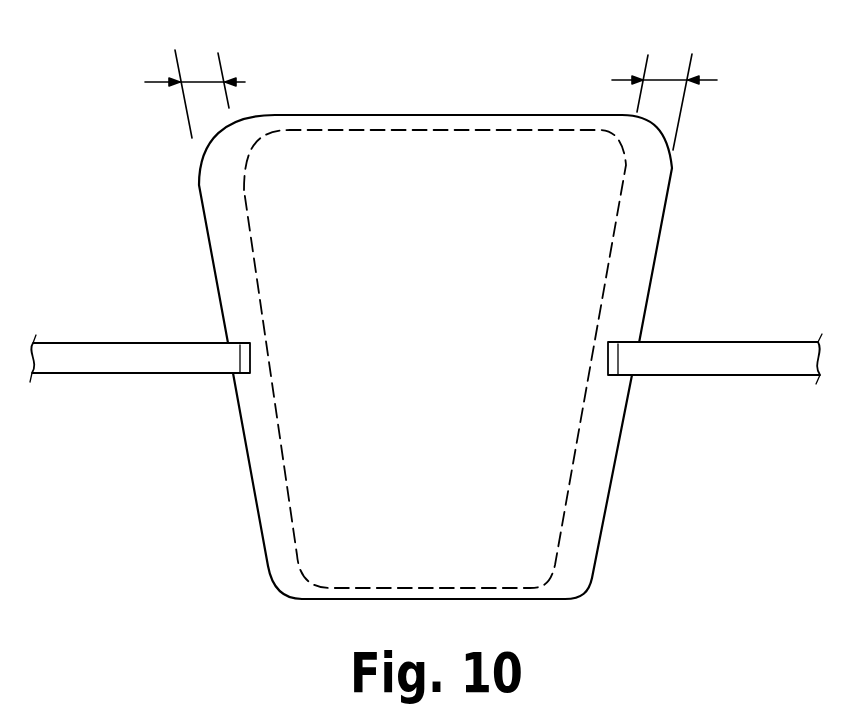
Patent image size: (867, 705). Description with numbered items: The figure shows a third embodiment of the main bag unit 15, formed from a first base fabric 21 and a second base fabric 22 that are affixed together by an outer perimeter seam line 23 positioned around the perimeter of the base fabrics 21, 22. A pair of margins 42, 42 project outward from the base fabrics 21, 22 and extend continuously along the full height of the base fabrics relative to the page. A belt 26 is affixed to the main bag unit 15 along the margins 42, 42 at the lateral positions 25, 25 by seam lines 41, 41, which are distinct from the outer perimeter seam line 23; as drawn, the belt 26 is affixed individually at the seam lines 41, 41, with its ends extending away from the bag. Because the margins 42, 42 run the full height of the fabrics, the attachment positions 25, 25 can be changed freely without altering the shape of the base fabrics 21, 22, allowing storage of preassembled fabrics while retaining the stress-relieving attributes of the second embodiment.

The main bag unit 15 is at (676, 163).
The first base fabric 21 is at (532, 545).
The second base fabric 22 is at (434, 357).
The outer perimeter seam line 23 is at (290, 515).
The lateral position 25 is at (242, 340).
The belt 26 is at (92, 360).
The seam line 41 is at (240, 355).
The margin 42 is at (270, 453).